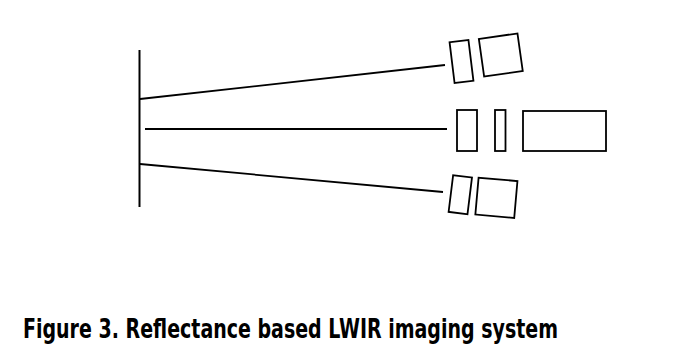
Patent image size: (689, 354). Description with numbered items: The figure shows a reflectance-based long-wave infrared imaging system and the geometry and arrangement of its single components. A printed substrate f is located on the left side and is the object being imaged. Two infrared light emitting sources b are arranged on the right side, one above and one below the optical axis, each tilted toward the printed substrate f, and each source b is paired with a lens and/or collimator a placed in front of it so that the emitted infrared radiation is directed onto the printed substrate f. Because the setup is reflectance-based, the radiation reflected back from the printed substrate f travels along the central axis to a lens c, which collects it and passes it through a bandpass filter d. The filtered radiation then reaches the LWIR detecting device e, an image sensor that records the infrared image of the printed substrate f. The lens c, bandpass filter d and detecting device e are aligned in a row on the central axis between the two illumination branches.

The lens and/or collimator a is at (461, 127).
The infrared light emitting source b is at (498, 125).
The lens c is at (467, 130).
The bandpass filter d is at (500, 119).
The LWIR detecting device e is at (564, 131).
The printed substrate f is at (150, 126).